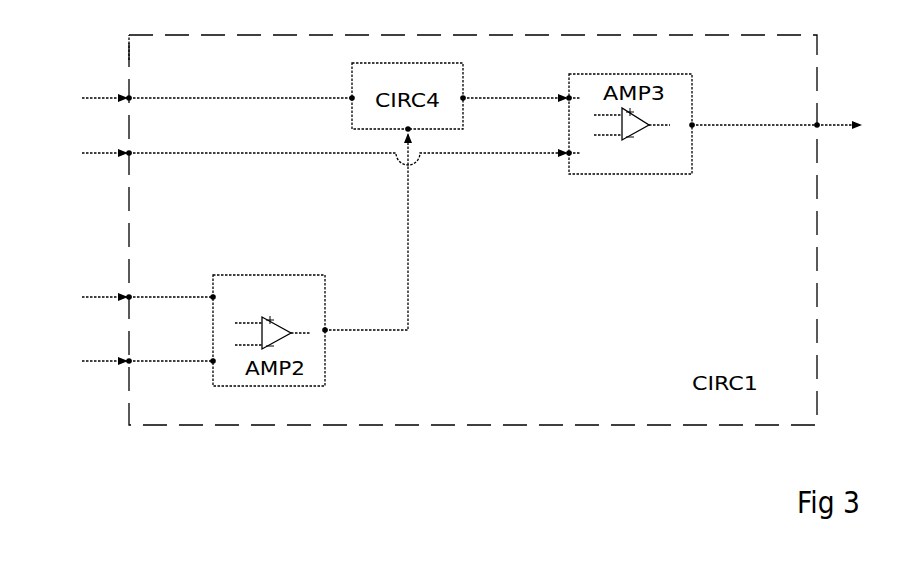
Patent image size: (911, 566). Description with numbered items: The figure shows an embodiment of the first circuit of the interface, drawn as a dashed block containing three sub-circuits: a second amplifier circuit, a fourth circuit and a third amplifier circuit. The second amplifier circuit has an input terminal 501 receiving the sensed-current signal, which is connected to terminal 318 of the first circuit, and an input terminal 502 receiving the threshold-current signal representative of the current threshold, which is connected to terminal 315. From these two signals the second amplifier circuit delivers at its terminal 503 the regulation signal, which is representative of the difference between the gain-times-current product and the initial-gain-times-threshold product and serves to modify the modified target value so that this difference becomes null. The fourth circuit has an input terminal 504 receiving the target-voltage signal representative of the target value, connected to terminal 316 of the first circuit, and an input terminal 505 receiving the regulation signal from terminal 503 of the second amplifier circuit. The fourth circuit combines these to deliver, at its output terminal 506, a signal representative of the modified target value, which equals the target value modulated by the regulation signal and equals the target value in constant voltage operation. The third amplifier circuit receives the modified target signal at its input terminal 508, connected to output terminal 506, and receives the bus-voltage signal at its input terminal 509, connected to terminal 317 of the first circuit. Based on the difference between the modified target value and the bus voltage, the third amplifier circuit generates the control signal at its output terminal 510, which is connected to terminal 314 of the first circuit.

The terminal of circuit CIRC1 314 is at (819, 127).
The terminal of circuit CIRC1 315 is at (131, 361).
The terminal of circuit CIRC1 316 is at (131, 97).
The terminal of circuit CIRC1 317 is at (131, 153).
The terminal of circuit CIRC1 318 is at (131, 297).
The input terminal 501 is at (213, 297).
The input terminal 502 is at (213, 362).
The terminal 503 is at (327, 332).
The input terminal 504 is at (352, 97).
The input terminal 505 is at (410, 131).
The output terminal 506 is at (463, 97).
The input terminal 508 is at (571, 97).
The input terminal 509 is at (569, 155).
The output terminal 510 is at (694, 124).